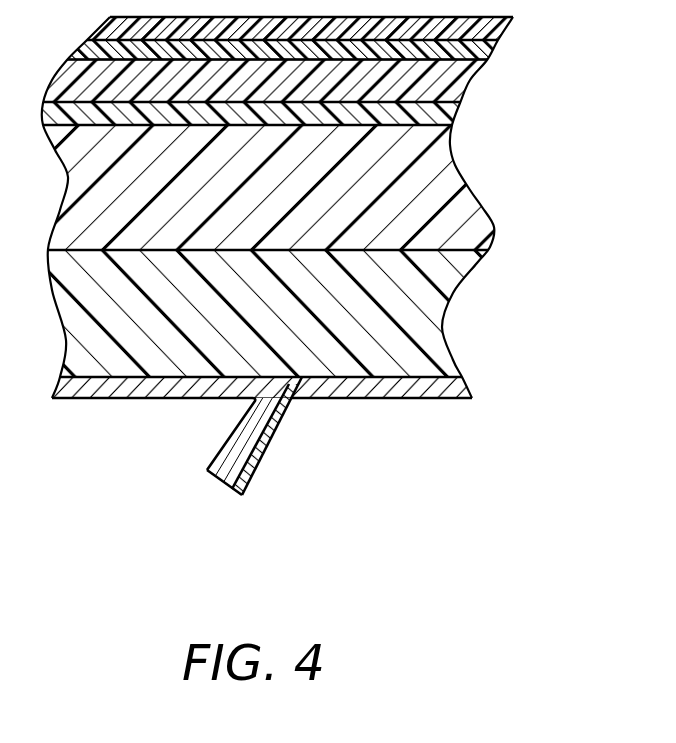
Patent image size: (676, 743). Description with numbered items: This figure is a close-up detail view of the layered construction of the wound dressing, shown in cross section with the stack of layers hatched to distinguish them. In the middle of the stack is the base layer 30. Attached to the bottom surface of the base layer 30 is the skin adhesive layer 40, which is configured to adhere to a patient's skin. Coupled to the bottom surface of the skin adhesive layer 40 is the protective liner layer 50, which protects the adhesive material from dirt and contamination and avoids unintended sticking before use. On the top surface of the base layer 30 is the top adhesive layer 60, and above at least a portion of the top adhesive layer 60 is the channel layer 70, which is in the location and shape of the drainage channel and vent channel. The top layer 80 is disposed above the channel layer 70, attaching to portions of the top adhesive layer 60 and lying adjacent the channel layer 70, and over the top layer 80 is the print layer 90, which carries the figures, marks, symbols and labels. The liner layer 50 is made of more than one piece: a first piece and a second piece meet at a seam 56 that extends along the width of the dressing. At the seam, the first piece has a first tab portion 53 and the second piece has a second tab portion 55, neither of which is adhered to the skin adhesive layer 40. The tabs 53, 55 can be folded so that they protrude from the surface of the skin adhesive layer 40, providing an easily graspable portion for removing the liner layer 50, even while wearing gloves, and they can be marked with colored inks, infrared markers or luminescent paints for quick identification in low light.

The base layer 30 is at (433, 187).
The skin adhesive layer 40 is at (450, 302).
The protective liner layer 50 is at (435, 390).
The first tab portion 53 is at (211, 438).
The second tab portion 55 is at (278, 468).
The seam 56 is at (211, 486).
The top adhesive layer 60 is at (453, 113).
The channel layer 70 is at (460, 80).
The top layer 80 is at (473, 50).
The print layer 90 is at (511, 24).